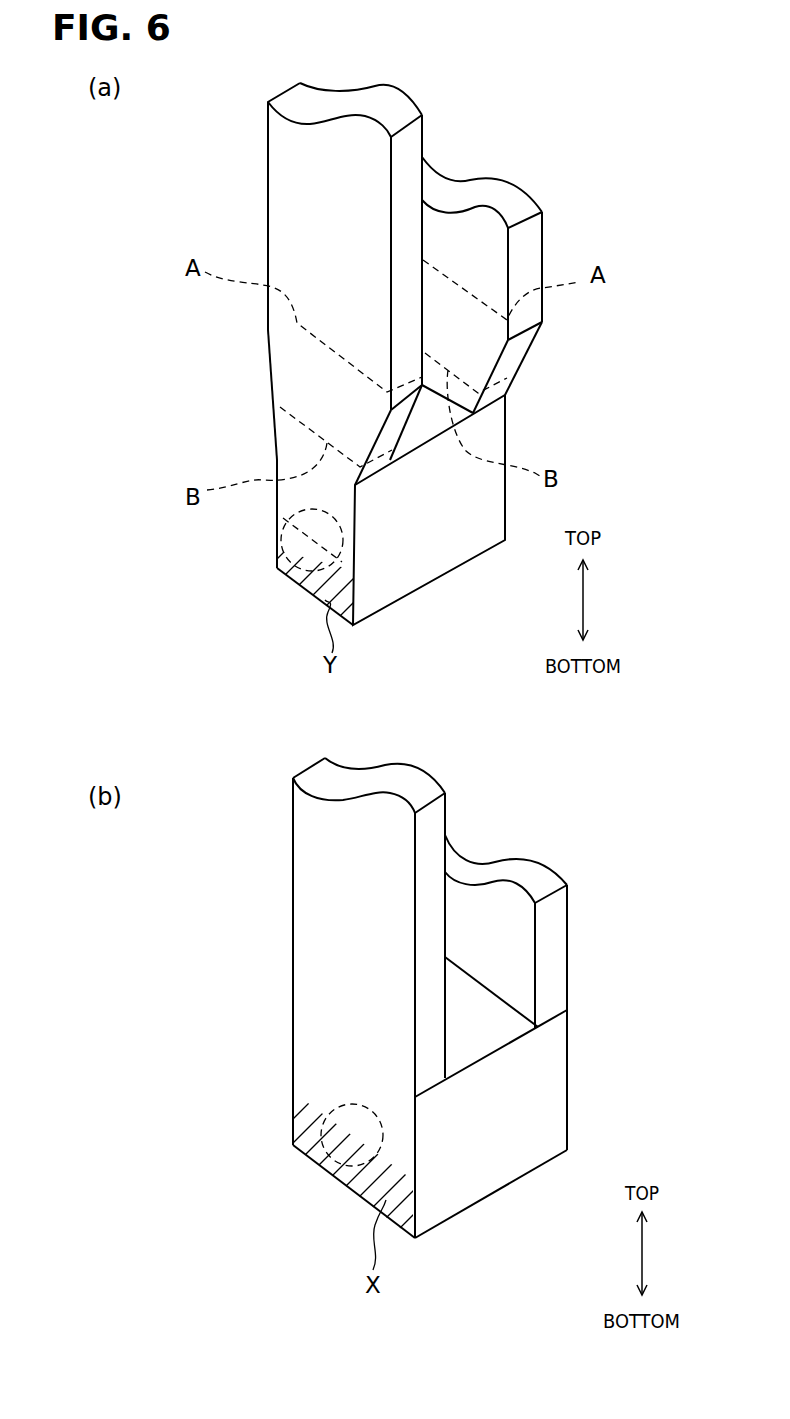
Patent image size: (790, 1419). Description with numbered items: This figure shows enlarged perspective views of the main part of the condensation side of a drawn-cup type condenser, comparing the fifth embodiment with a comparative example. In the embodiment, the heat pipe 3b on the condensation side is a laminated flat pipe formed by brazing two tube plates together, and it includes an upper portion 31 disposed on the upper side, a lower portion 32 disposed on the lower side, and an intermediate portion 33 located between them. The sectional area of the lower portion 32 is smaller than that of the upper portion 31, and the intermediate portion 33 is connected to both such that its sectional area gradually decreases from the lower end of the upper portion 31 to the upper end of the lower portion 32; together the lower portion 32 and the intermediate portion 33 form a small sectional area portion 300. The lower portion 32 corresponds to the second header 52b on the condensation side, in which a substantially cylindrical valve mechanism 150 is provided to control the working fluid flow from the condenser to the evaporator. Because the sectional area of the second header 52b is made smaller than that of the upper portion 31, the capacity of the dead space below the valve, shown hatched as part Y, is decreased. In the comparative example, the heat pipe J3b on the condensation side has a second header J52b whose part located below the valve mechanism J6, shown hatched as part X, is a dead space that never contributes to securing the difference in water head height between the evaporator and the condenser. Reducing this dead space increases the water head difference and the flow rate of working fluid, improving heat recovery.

The heat pipe on the condensation side 3b is at (383, 87).
The upper portion 31 is at (284, 170).
The intermediate portion 33 is at (287, 380).
The lower portion 32 is at (290, 473).
The small sectional area portion 300 is at (391, 445).
The second header on the condensation side 52b is at (433, 550).
The valve mechanism 150 is at (283, 563).
The heat pipe on the condensation side (comparative example) J3b is at (385, 762).
The second header on the condensation side (comparative example) J52b is at (543, 1068).
The valve mechanism (comparative example) J6 is at (318, 1152).